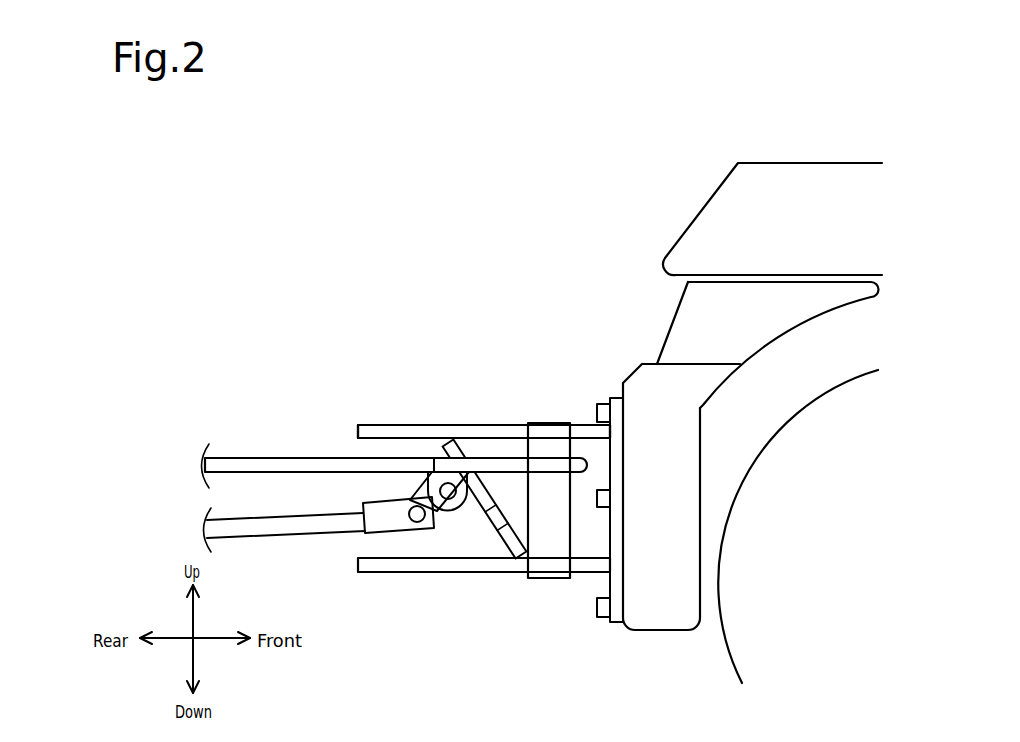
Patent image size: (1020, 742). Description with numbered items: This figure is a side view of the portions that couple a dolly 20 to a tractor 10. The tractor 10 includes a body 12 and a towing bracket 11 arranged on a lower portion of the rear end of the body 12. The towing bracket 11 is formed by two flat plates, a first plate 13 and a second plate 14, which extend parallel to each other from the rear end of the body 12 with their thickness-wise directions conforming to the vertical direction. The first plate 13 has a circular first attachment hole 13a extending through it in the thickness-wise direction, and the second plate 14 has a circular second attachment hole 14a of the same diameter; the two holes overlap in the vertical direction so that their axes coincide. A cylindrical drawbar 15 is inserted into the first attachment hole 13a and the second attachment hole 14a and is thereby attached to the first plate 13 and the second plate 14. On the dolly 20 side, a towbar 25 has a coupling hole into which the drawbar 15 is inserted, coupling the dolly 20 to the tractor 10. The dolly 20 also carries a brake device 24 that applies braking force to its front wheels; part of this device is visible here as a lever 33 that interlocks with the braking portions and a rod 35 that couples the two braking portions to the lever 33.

The tractor 10 is at (658, 225).
The towing bracket 11 is at (377, 423).
The body 12 is at (635, 365).
The first plate 13 is at (408, 428).
The first attachment hole 13a is at (560, 433).
The second plate 14 is at (408, 565).
The second attachment hole 14a is at (565, 567).
The drawbar 15 is at (540, 422).
The dolly 20 is at (198, 397).
The brake device 24 is at (337, 555).
The towbar 25 is at (257, 457).
The lever 33 is at (507, 547).
The rod 35 is at (275, 537).